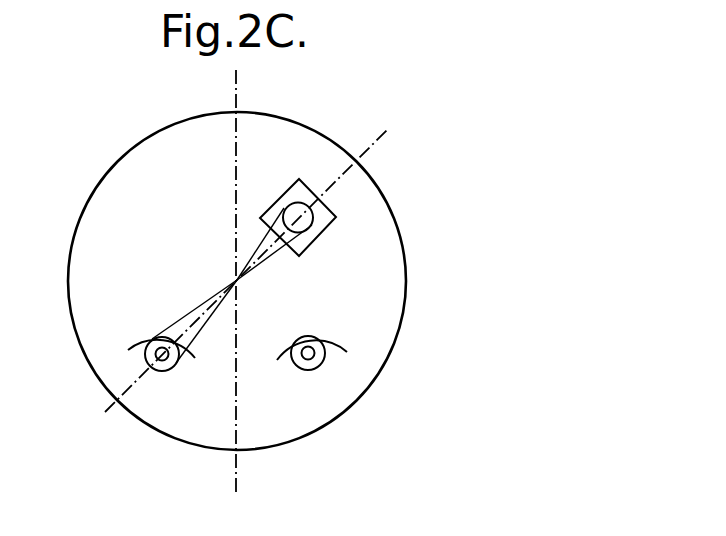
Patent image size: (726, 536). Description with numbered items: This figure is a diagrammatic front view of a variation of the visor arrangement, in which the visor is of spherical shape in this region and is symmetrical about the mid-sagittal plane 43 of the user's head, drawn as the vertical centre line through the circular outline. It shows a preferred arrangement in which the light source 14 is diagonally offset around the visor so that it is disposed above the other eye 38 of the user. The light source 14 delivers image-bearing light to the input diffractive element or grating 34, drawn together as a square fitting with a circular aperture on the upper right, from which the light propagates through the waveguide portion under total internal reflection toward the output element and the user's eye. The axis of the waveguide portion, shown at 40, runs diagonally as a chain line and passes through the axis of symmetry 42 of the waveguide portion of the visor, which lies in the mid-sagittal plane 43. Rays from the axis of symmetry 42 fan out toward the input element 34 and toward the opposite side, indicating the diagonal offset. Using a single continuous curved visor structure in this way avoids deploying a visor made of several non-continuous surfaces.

The mid-sagittal plane 43 is at (236, 132).
The axis of the waveguide portion 40 is at (373, 144).
The axis of symmetry 42 is at (237, 280).
The input diffractive element 34 is at (377, 218).
The light source 14 is at (317, 233).
The other eye 38 is at (312, 368).